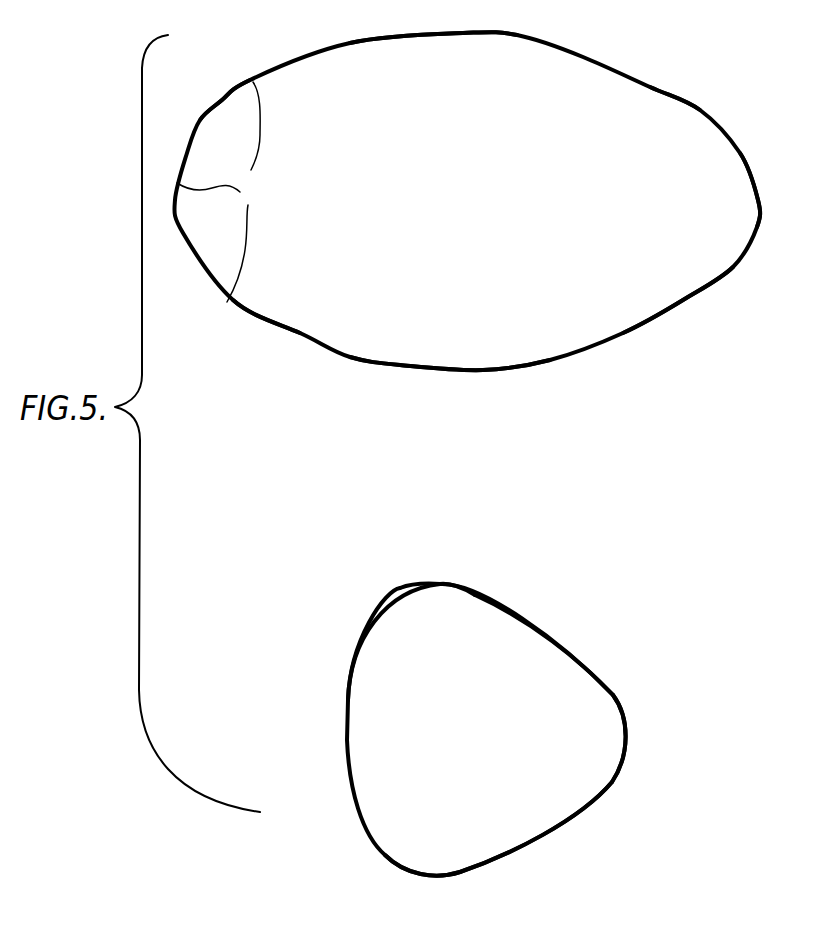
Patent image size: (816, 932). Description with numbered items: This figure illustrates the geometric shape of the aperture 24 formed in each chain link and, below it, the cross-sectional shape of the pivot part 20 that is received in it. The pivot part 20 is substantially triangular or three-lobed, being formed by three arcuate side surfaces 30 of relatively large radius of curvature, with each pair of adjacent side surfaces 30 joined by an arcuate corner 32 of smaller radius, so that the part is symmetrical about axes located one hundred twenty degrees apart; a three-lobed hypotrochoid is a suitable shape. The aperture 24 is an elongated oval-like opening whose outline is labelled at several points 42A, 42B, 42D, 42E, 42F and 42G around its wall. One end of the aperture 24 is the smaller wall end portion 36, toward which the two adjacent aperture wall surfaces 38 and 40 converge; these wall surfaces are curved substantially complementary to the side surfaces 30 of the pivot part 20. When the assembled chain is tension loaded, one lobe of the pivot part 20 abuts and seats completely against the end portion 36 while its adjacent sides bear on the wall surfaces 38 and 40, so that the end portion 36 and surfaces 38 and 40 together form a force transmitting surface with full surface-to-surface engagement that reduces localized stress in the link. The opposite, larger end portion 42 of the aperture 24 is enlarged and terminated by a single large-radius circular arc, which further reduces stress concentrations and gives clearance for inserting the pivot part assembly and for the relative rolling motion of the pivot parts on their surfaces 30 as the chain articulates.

The pivot part 20 is at (347, 703).
The aperture 24 is at (303, 352).
The arcuate side surfaces 30 is at (348, 690).
The arcuate corners 32 is at (387, 600).
The smaller wall end portion 36 is at (758, 200).
The aperture wall surface 38 is at (670, 97).
The aperture wall surface 40 is at (683, 299).
The larger end portion 42 is at (225, 192).
The lobe A 42A is at (250, 315).
The lobe B 42B is at (222, 100).
The lobe D 42D is at (415, 330).
The lobe E 42E is at (357, 43).
The lobe F 42F is at (510, 363).
The lobe G 42G is at (482, 33).